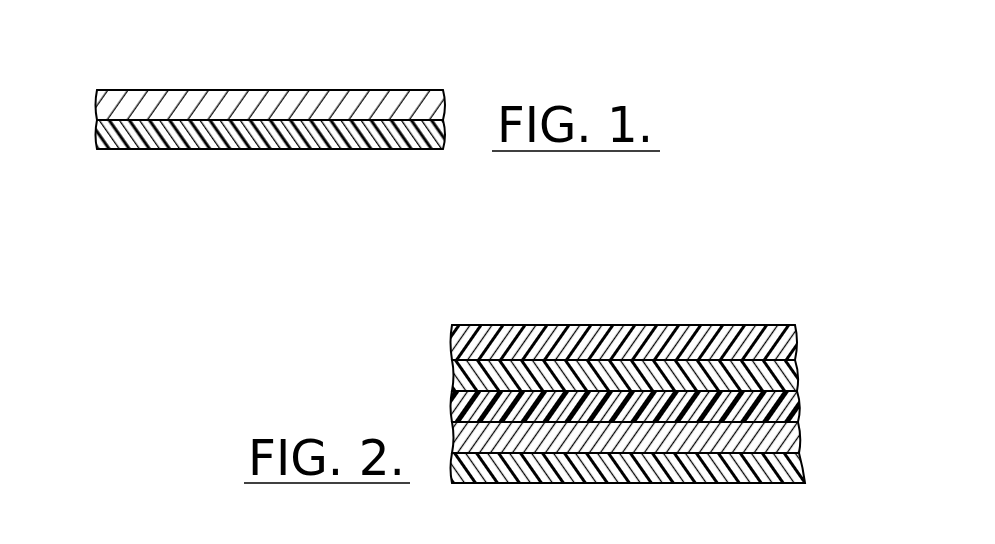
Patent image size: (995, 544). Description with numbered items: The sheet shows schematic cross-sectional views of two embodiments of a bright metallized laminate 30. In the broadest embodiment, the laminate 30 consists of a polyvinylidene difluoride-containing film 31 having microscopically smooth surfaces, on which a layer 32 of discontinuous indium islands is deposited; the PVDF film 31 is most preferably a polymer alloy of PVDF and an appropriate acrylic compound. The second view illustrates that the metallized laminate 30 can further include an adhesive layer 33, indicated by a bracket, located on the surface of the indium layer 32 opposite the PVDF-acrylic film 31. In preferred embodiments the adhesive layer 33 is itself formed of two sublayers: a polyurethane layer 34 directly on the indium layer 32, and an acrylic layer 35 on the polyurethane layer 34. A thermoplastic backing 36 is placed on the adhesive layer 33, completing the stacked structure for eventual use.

In FIG. 1, the bright metallized laminate 30 is at (266, 87).
In FIG. 1, the polyvinylidene difluoride-containing film 31 is at (99, 137).
In FIG. 2, the polyvinylidene difluoride-containing film 31 is at (804, 468).
In FIG. 1, the layer of discontinuous indium islands 32 is at (97, 100).
In FIG. 2, the layer of discontinuous indium islands 32 is at (801, 437).
In FIG. 2, the adhesive layer 33 is at (632, 385).
In FIG. 2, the polyurethane layer 34 is at (801, 404).
In FIG. 2, the acrylic layer 35 is at (800, 373).
In FIG. 2, the thermoplastic backing 36 is at (796, 352).